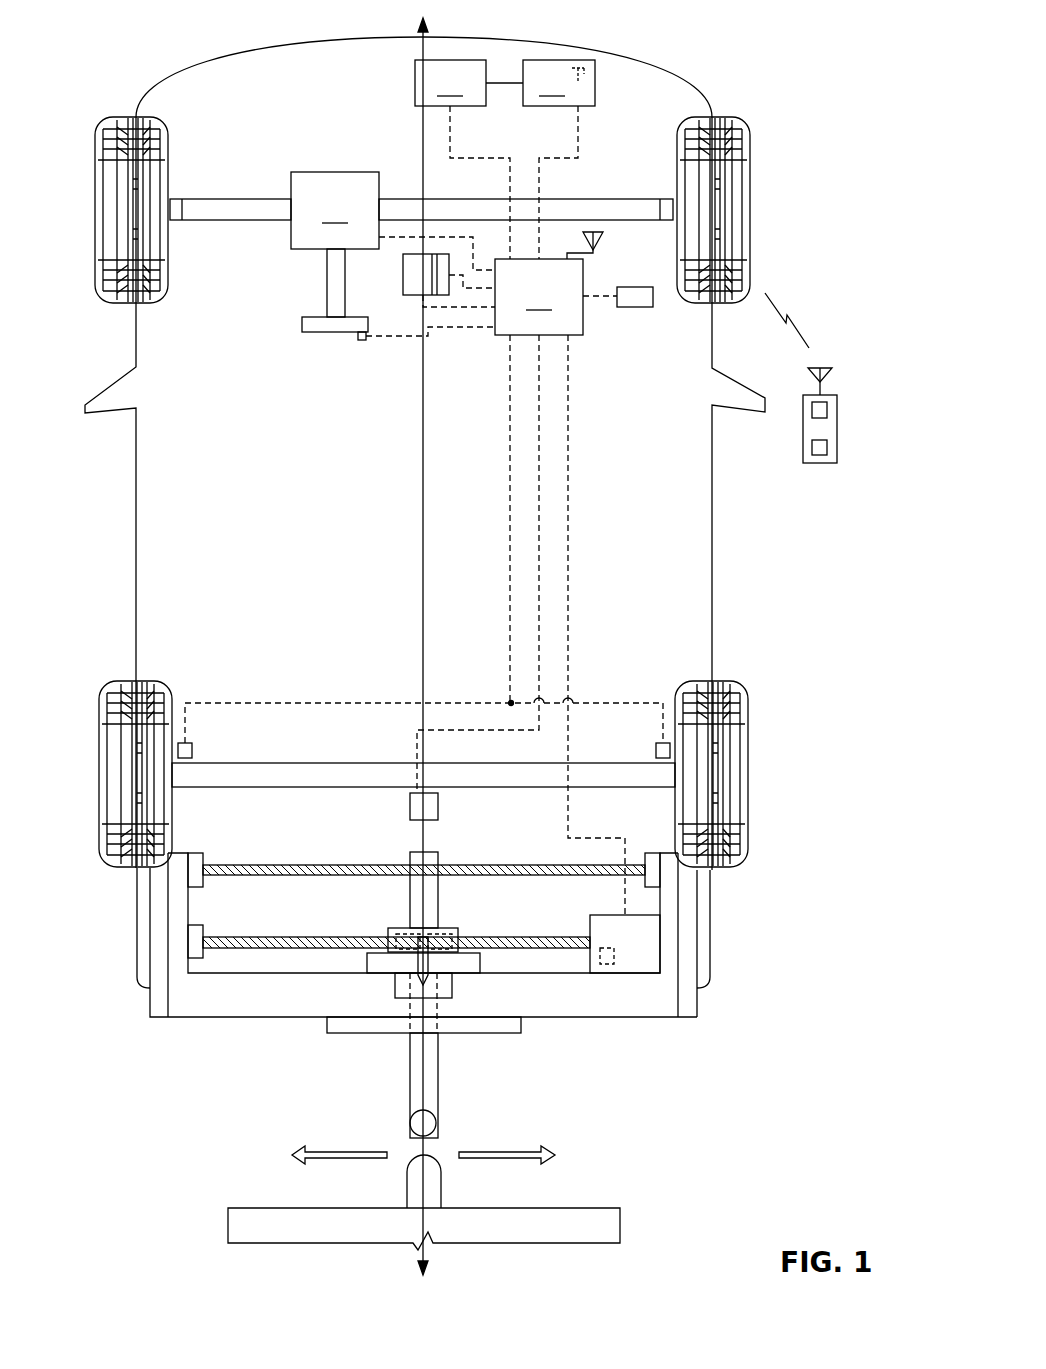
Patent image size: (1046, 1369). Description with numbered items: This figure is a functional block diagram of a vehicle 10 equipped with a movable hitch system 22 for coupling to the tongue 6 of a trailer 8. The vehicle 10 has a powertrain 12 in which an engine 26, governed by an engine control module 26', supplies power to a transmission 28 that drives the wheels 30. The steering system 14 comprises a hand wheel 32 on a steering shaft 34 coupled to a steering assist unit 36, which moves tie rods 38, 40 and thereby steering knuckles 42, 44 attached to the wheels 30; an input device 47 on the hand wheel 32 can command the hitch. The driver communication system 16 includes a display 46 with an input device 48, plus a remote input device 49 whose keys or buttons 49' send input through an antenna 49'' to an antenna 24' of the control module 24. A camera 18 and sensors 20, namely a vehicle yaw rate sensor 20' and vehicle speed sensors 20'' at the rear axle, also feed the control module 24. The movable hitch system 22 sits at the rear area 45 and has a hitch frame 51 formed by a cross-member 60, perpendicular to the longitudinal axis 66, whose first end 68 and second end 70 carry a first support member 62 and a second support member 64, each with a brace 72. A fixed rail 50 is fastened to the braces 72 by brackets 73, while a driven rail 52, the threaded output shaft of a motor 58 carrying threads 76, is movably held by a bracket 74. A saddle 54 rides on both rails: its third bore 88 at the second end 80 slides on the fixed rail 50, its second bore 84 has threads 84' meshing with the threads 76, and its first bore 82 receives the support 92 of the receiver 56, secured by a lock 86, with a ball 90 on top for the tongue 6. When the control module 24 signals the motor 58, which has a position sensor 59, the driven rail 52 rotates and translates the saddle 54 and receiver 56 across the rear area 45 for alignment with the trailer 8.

The tongue 6 is at (442, 1198).
The trailer 8 is at (600, 1210).
The vehicle 10 is at (783, 26).
The powertrain 12 is at (503, 56).
The steering system 14 is at (292, 305).
The driver communication system 16 is at (386, 313).
The camera 18 is at (410, 807).
The sensors 20 is at (672, 346).
The vehicle yaw rate sensor 20' is at (618, 327).
The vehicle speed sensor 20'' is at (424, 728).
The movable hitch system 22 is at (493, 815).
The control module 24 is at (502, 576).
The antenna 24' is at (614, 242).
The engine 26 is at (559, 159).
The engine control module 26' is at (615, 87).
The transmission 28 is at (469, 159).
The wheels 30 is at (95, 205).
The hand wheel 32 is at (318, 333).
The steering shaft 34 is at (327, 282).
The steering assist unit 36 is at (335, 210).
The tie rod 38 is at (233, 199).
The tie rod 40 is at (618, 199).
The steering knuckle 42 is at (175, 199).
The steering knuckle 44 is at (665, 199).
The rear area 45 is at (715, 893).
The display 46 is at (403, 270).
The input device 47 is at (362, 341).
The input device 48 is at (443, 296).
The remote input device 49 is at (812, 313).
The keys or buttons 49' is at (792, 429).
The antenna 49'' is at (790, 375).
The fixed rail 50 is at (250, 865).
The hitch frame 51 is at (645, 1050).
The driven rail 52 is at (250, 933).
The saddle 54 is at (455, 900).
The receiver 56 is at (398, 1125).
The motor 58 is at (605, 915).
The sensor 59 is at (612, 968).
The cross-member 60 is at (690, 1030).
The first support member 62 is at (148, 935).
The second support member 64 is at (688, 940).
The longitudinal axis 66 is at (420, 522).
The first end 68 is at (152, 1010).
The second end 70 is at (680, 1003).
The brace 72 is at (180, 853).
The brackets 73 is at (200, 853).
The bracket 74 is at (218, 905).
The threads 76 is at (515, 938).
The second end 80 is at (432, 833).
The first bore 82 is at (398, 985).
The second bore 84 is at (447, 929).
The threads 84' is at (411, 917).
The lock 86 is at (432, 963).
The third bore 88 is at (410, 858).
The ball 90 is at (437, 1123).
The support 92 is at (440, 1070).